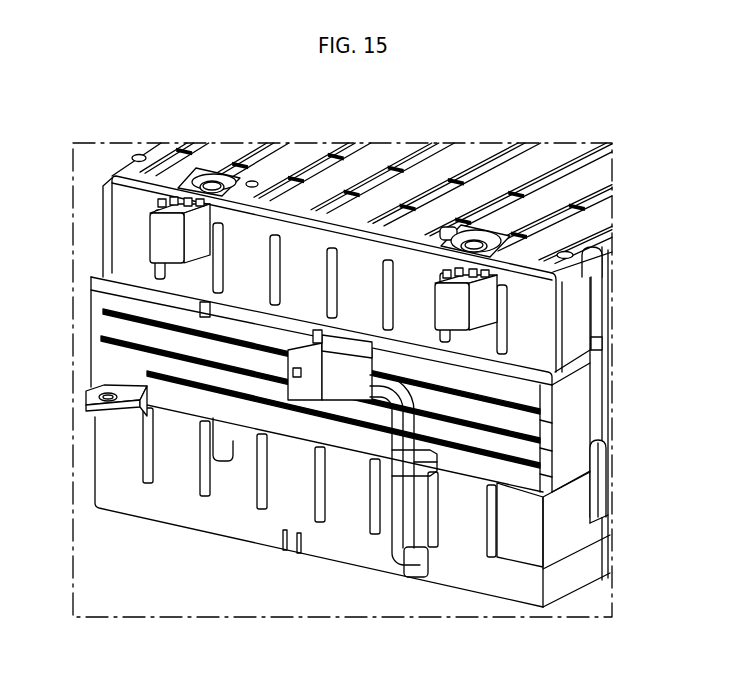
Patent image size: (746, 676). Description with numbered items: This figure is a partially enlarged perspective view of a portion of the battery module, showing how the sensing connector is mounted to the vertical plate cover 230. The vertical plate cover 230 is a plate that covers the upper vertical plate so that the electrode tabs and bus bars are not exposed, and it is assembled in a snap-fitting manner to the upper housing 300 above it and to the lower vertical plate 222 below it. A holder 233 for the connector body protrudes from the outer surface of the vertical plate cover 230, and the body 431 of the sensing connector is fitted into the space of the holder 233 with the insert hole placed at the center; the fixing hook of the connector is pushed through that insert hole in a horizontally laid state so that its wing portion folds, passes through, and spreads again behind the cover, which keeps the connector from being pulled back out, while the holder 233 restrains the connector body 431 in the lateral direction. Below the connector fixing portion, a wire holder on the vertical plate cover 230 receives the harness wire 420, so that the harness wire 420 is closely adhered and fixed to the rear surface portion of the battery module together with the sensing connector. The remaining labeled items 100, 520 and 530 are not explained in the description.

The battery module 100 is at (618, 297).
The upper housing 300 is at (343, 187).
The vertical plate cover 230 is at (116, 328).
The lower vertical plate 222 is at (116, 444).
The connector body 431 is at (305, 350).
The holder for the connector body 233 is at (347, 350).
The harness wire 420 is at (395, 533).
The pipe clamp 520 is at (430, 477).
The hook 530 is at (223, 440).